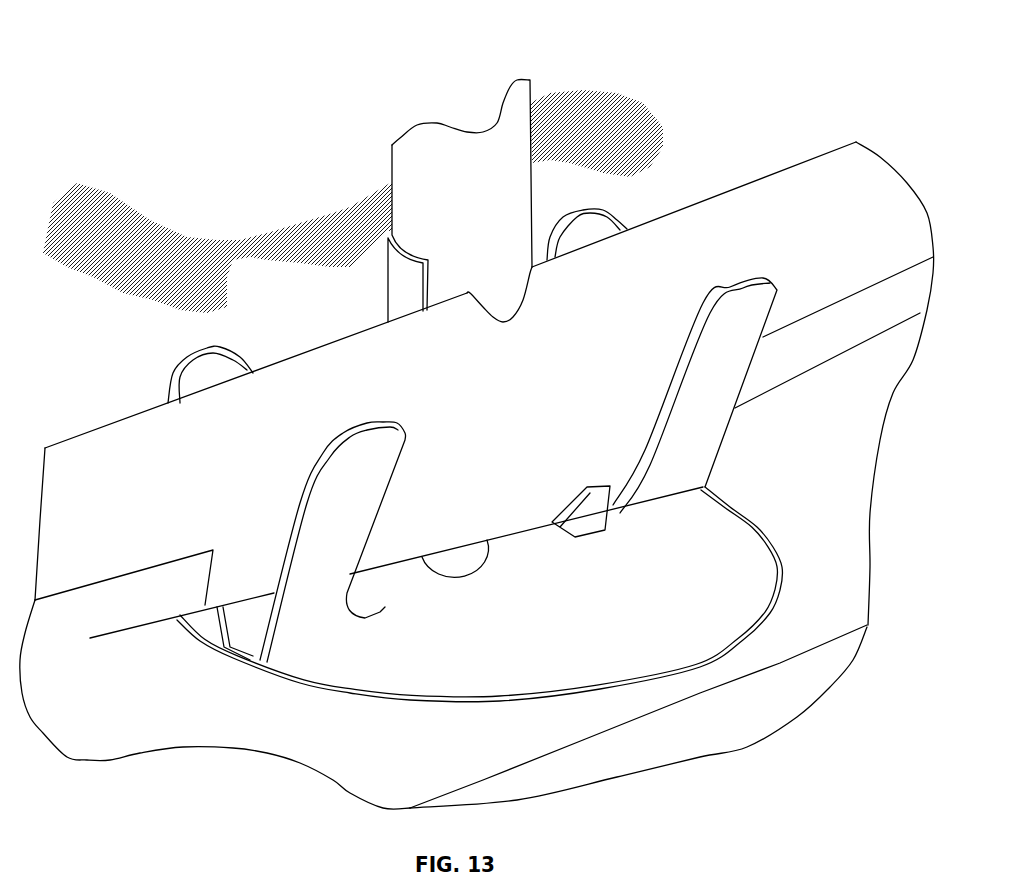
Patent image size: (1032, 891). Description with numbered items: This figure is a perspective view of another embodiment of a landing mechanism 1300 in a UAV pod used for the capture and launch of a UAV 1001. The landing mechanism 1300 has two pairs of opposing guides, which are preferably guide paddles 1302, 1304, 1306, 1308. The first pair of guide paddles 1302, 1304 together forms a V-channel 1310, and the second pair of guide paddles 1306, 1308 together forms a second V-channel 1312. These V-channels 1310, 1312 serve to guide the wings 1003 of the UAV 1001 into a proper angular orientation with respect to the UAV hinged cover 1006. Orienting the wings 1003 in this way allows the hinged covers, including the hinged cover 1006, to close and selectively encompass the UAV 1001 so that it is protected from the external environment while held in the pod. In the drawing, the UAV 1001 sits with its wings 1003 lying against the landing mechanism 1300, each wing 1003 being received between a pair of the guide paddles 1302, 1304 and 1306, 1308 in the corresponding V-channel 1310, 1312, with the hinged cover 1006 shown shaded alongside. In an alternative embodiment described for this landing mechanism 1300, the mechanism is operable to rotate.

The UAV 1001 is at (457, 180).
The wings 1003 is at (823, 187).
The UAV hinged cover 1006 is at (267, 228).
The landing mechanism 1300 is at (168, 356).
The guide paddle 1302 is at (243, 360).
The guide paddle 1304 is at (340, 477).
The guide paddle 1306 is at (596, 226).
The guide paddle 1308 is at (698, 437).
The V-channel 1310 is at (240, 623).
The V-channel 1312 is at (607, 487).